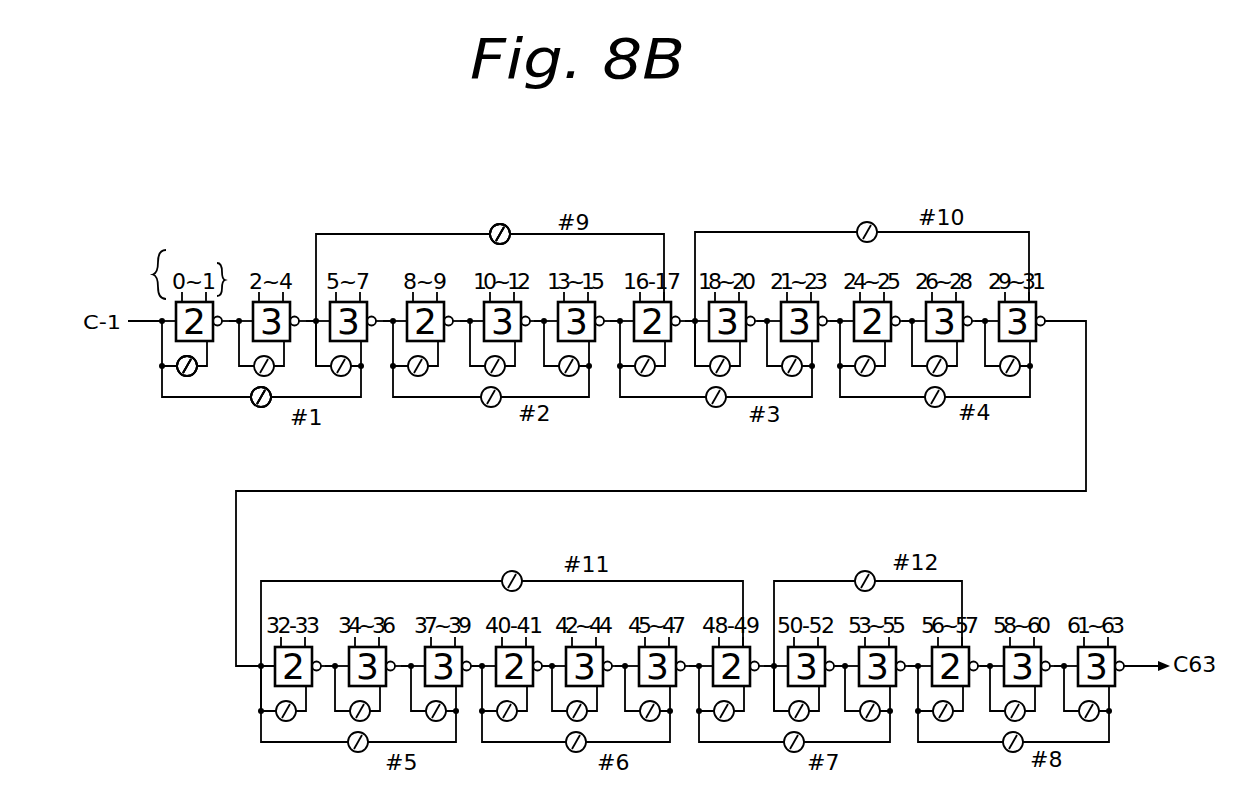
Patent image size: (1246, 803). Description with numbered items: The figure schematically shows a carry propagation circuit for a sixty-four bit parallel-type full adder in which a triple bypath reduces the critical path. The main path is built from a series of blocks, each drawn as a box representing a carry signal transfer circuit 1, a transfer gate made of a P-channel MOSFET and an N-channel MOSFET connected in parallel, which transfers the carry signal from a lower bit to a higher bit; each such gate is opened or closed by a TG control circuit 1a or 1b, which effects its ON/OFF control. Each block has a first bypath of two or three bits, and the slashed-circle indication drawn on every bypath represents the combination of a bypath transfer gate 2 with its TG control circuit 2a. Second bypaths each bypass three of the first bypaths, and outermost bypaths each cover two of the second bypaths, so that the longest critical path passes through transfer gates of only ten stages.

The carry signal transfer circuit 1 is at (175, 338).
The TG control circuit 1a is at (147, 274).
The TG control circuit 1b is at (232, 279).
The carry signal transfer circuit 2 is at (187, 377).
The TG control circuit 2a is at (187, 377).